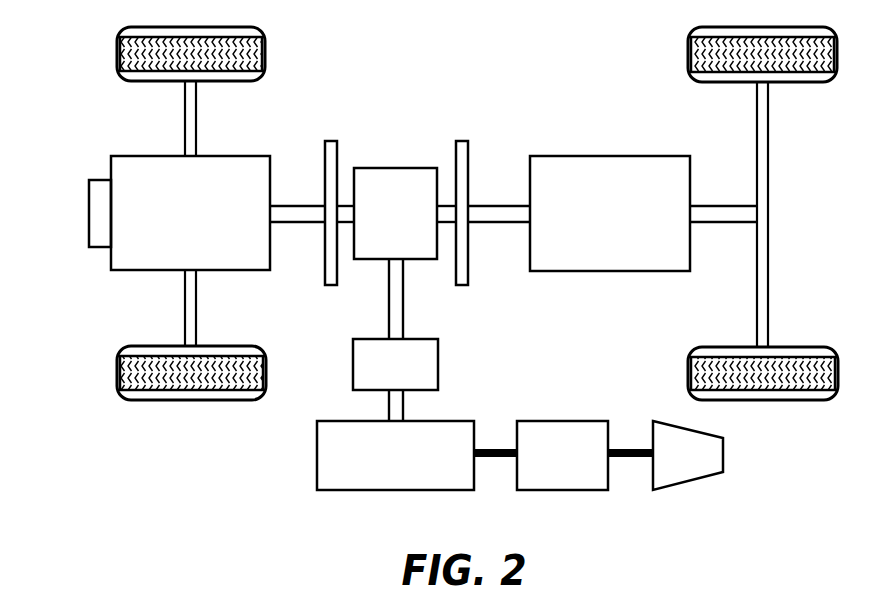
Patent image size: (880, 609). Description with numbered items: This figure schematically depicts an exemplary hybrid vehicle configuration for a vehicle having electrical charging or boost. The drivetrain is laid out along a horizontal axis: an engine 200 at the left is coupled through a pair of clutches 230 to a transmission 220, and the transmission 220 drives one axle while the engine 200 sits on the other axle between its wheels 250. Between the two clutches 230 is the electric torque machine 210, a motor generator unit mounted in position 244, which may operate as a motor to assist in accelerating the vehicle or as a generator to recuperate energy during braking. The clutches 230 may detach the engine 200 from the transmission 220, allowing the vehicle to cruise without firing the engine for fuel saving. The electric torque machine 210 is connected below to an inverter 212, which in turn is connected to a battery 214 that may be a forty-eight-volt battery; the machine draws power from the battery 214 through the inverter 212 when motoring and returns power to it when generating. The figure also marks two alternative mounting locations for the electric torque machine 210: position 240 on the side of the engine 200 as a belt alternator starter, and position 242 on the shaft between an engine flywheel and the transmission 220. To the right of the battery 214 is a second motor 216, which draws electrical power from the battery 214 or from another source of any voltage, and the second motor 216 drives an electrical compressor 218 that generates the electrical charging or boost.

The engine 200 is at (190, 213).
The electric torque machine 210 is at (395, 213).
The inverter 212 is at (395, 364).
The battery 214 is at (395, 455).
The second motor 216 is at (562, 455).
The electrical compressor 218 is at (688, 455).
The transmission 220 is at (610, 213).
The clutches 230 is at (449, 139).
The position 240 is at (86, 222).
The position 242 is at (308, 226).
The position 244 is at (385, 263).
The wheels 250 is at (117, 52).